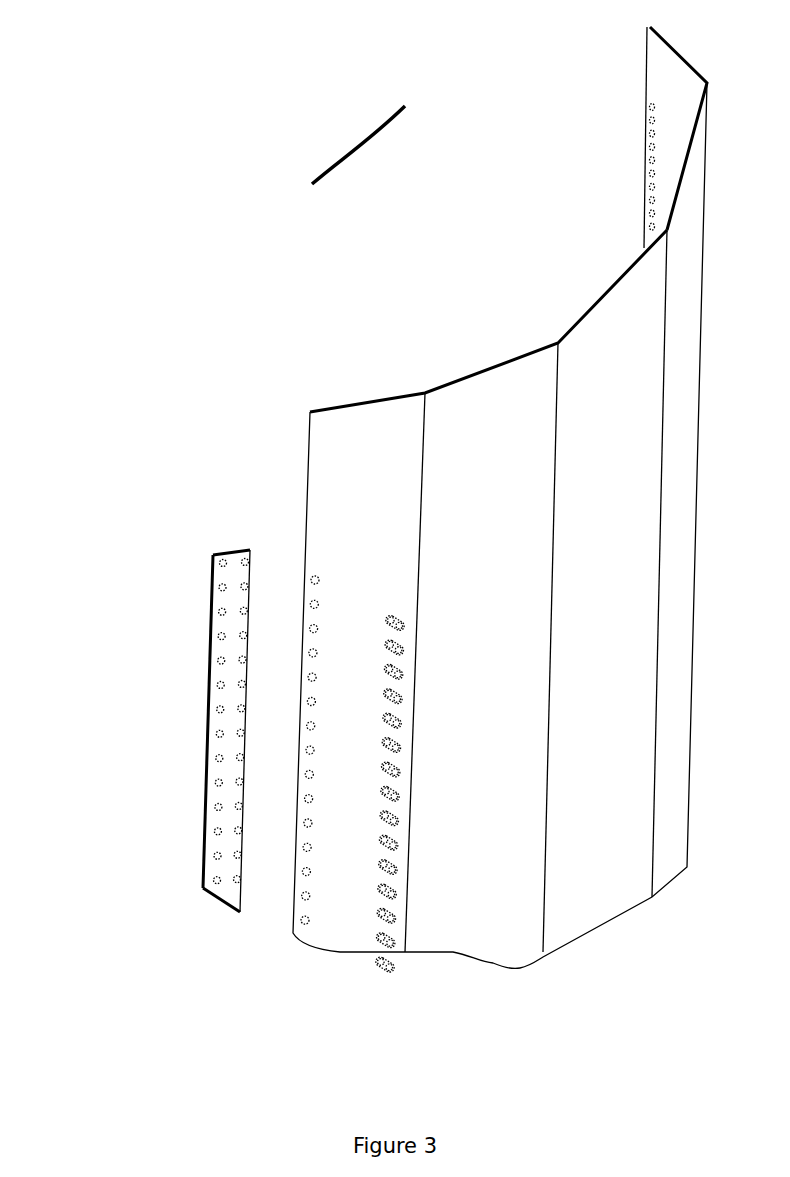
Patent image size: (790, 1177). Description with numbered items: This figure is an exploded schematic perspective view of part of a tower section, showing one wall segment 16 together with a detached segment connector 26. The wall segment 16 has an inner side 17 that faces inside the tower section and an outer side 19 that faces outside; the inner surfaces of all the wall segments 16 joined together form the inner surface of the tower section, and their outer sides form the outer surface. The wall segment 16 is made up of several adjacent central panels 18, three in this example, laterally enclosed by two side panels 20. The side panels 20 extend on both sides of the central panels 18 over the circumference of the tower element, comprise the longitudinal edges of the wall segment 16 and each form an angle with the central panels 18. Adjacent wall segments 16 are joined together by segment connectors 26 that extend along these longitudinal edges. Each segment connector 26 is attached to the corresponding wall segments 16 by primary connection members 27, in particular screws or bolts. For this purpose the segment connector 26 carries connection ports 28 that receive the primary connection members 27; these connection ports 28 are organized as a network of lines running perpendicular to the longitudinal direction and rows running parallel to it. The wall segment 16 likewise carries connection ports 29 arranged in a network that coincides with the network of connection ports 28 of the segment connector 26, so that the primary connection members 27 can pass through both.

The wall segment 16 is at (358, 145).
The inner side 17 is at (655, 50).
The central panel 18 is at (640, 350).
The outer side 19 is at (500, 497).
The side panel 20 is at (667, 67).
The segment connector 26 is at (190, 808).
The primary connection member 27 is at (397, 922).
The connection port 28 is at (220, 710).
The connection port 29 is at (647, 127).